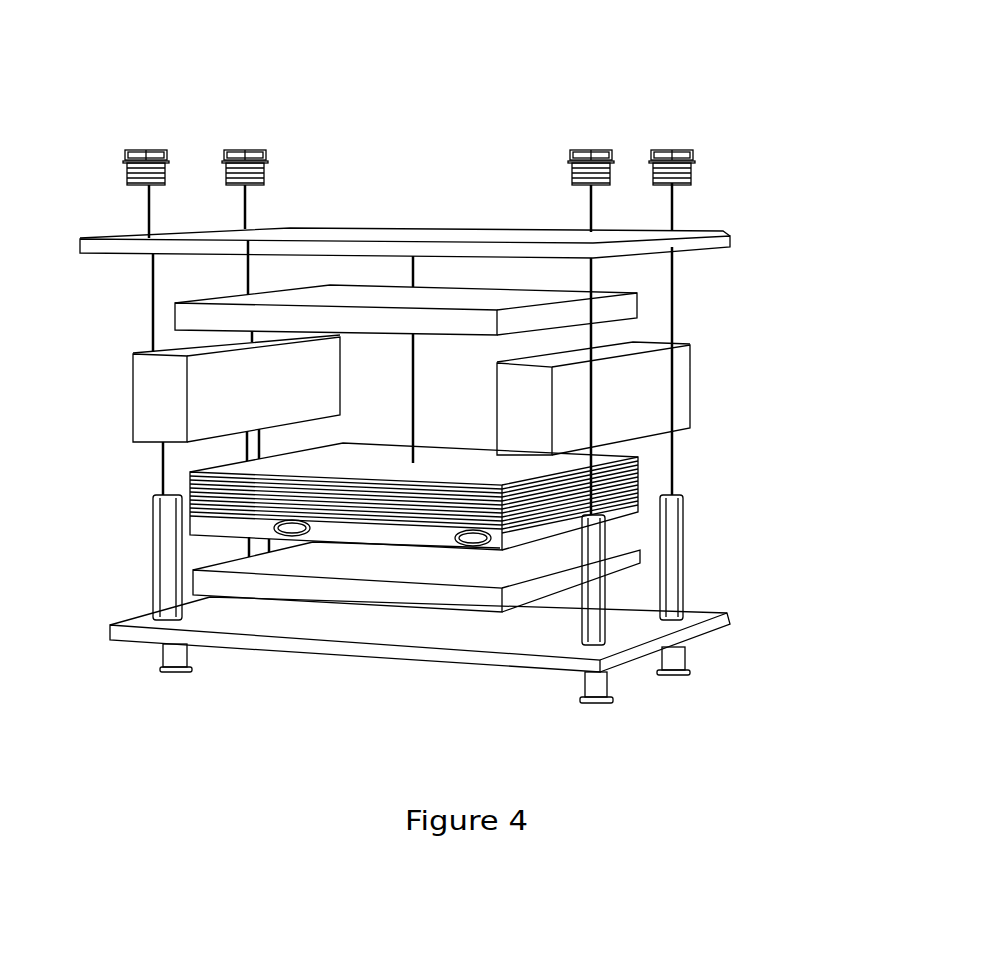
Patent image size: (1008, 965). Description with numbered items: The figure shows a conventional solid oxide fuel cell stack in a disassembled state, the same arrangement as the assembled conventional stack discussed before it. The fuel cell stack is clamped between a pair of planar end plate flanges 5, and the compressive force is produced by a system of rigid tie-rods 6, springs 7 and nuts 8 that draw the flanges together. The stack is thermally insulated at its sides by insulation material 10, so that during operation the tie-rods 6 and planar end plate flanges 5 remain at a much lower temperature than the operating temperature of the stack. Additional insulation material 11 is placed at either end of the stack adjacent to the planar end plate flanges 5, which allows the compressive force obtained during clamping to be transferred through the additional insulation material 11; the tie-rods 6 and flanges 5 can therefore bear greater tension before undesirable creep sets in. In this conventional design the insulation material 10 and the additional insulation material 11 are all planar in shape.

The planar end plate flange 5 is at (498, 243).
The tie-rod 6 is at (695, 553).
The spring 7 is at (573, 186).
The nut 8 is at (693, 156).
The insulation material 10 is at (200, 401).
The additional insulation material 11 is at (610, 303).